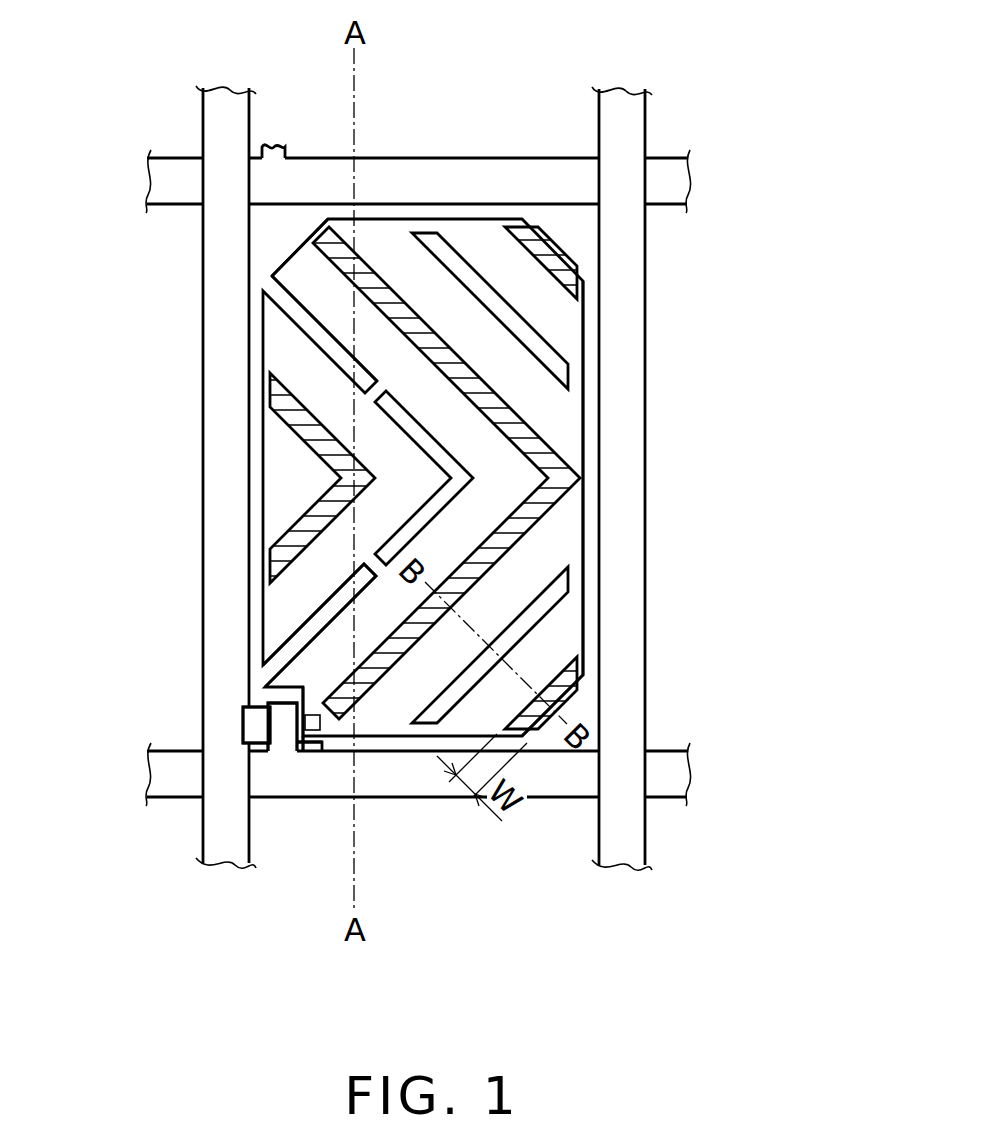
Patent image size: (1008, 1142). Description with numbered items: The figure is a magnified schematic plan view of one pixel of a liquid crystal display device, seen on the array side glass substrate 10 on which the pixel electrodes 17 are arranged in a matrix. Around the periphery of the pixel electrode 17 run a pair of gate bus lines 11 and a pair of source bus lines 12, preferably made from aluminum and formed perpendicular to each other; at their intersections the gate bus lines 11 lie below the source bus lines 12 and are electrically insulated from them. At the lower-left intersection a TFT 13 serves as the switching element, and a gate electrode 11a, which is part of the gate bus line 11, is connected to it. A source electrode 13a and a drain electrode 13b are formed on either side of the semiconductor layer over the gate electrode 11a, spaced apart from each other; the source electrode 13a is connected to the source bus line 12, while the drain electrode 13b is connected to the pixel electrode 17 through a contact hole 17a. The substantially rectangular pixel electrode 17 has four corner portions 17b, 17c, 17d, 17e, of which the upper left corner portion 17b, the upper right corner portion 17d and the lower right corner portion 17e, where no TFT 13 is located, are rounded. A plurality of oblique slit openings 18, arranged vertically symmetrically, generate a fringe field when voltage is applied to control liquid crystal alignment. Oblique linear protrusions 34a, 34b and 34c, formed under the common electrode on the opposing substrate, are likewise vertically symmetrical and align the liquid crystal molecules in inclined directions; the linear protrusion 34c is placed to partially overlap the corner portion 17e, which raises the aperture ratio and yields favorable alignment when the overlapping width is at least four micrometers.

The glass substrate 10 is at (782, 218).
The gate bus line 11 is at (472, 157).
The gate electrode 11a is at (268, 703).
The source bus line 12 is at (203, 832).
The TFT (thin film transistor) 13 is at (286, 760).
The source electrode 13a is at (240, 730).
The drain electrode 13b is at (297, 752).
The pixel electrode 17 is at (584, 420).
The contact hole 17a is at (322, 725).
The upper left corner portion 17b is at (313, 272).
The corner portion 17c is at (322, 670).
The upper right corner portion 17d is at (547, 288).
The lower right corner portion 17e is at (545, 667).
The opening 18 is at (322, 322).
The linear protrusion 34a is at (290, 437).
The linear protrusion 34b is at (402, 292).
The linear protrusion 34c is at (545, 232).